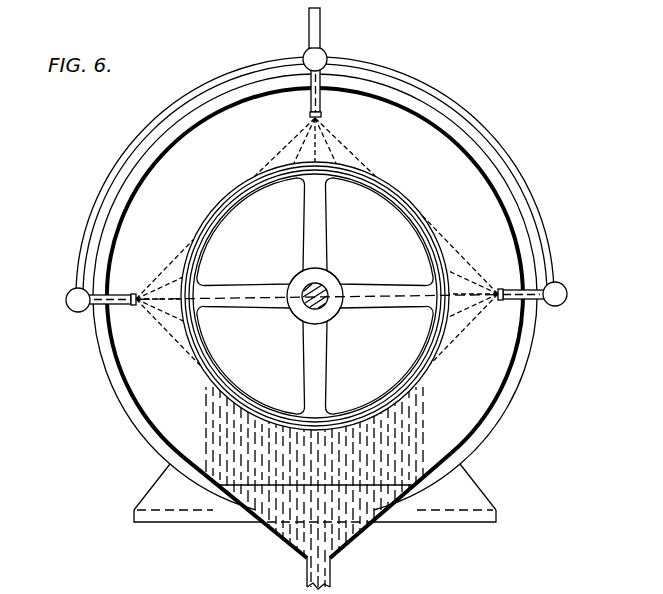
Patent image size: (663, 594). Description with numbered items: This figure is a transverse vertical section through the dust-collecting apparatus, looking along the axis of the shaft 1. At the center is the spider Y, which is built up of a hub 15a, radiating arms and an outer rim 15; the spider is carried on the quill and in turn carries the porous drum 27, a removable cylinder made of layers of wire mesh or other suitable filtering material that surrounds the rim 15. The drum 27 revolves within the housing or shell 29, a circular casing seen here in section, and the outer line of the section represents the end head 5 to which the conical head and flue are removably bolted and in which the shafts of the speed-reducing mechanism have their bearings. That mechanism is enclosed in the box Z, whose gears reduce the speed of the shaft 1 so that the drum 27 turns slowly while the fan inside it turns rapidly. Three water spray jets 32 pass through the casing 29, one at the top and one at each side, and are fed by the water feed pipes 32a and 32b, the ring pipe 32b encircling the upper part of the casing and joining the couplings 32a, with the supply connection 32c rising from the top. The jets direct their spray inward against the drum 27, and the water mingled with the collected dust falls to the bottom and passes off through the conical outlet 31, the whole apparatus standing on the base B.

The shaft 1 is at (326, 289).
The head 5 is at (530, 368).
The rim 15 is at (315, 296).
The hub 15a is at (340, 313).
The porous drum 27 is at (416, 213).
The housing or shell 29 is at (130, 199).
The conical outlet 31 is at (284, 536).
The water spray jet 32 is at (321, 101).
The water feed pipe 32a is at (327, 56).
The water feed pipe 32b is at (505, 130).
The supply pipe 32c is at (309, 40).
The base B is at (190, 521).
The spider Y is at (269, 360).
The box Z is at (379, 338).